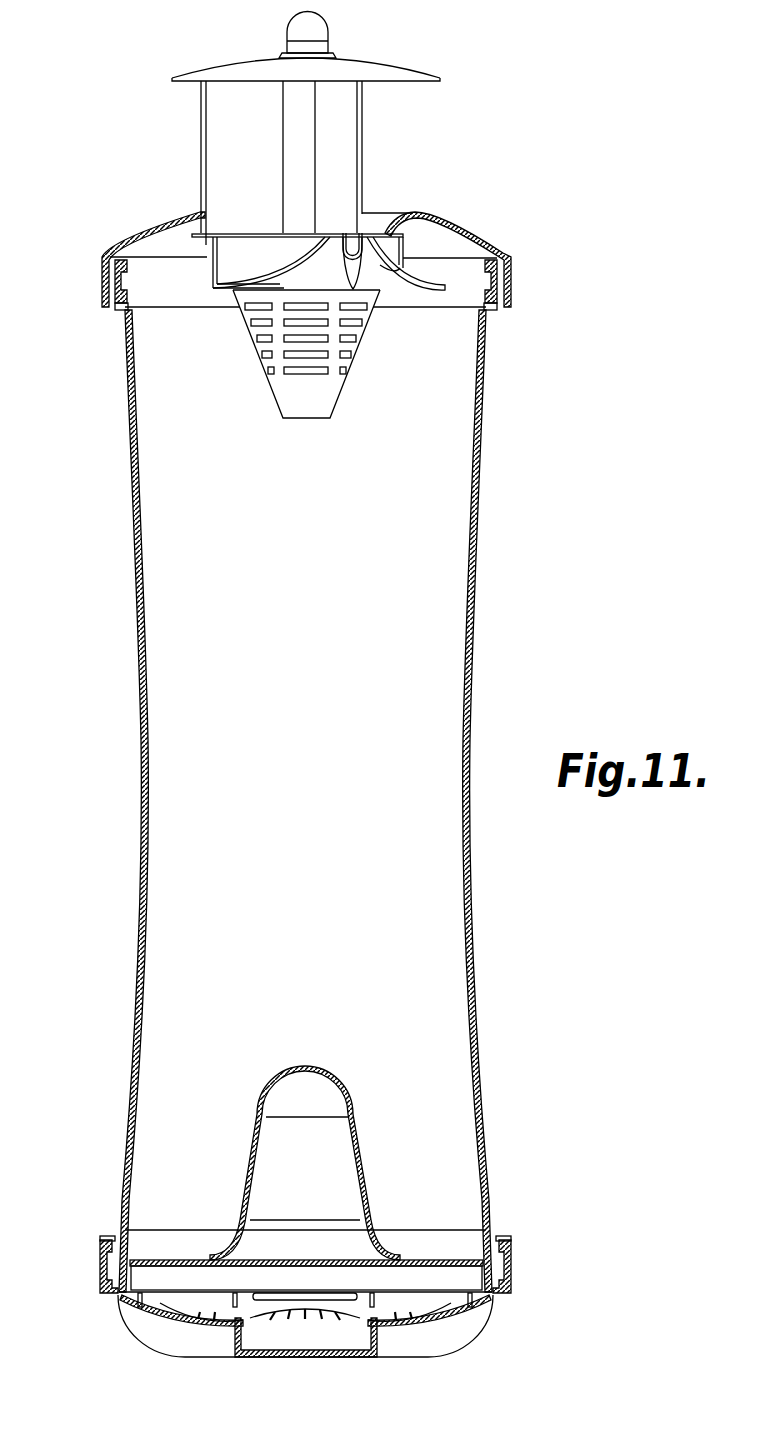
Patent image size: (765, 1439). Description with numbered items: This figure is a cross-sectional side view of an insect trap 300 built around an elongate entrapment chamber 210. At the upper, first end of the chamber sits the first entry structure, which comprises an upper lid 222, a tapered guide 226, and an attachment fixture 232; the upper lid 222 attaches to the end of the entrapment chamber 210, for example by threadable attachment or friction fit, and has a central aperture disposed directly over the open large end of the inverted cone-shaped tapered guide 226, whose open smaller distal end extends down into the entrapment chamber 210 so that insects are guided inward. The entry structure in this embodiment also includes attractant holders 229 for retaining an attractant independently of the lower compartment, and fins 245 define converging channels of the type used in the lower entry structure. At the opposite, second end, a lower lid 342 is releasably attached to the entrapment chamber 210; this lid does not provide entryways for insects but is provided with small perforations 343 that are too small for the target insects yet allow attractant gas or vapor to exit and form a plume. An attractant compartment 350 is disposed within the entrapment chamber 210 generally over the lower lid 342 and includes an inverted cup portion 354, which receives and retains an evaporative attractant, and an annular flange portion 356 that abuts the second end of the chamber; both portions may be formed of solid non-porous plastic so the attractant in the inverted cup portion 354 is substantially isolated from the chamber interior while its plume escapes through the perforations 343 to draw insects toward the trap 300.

The insect trap 300 is at (578, 112).
The attachment fixture 232 is at (417, 64).
The upper lid 222 is at (500, 236).
The attractant holders 229 is at (422, 290).
The tapered guide 226 is at (350, 386).
The entrapment chamber 210 is at (478, 636).
The attractant compartment 350 is at (362, 1110).
The inverted cup portion 354 is at (360, 1176).
The annular flange portion 356 is at (172, 1260).
The lower lid 342 is at (508, 1258).
The fins 245 is at (103, 1285).
The perforations 343 is at (433, 1325).